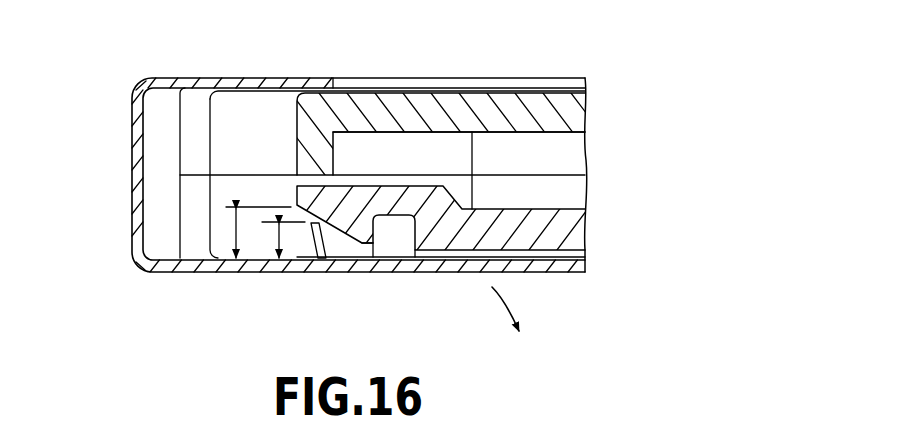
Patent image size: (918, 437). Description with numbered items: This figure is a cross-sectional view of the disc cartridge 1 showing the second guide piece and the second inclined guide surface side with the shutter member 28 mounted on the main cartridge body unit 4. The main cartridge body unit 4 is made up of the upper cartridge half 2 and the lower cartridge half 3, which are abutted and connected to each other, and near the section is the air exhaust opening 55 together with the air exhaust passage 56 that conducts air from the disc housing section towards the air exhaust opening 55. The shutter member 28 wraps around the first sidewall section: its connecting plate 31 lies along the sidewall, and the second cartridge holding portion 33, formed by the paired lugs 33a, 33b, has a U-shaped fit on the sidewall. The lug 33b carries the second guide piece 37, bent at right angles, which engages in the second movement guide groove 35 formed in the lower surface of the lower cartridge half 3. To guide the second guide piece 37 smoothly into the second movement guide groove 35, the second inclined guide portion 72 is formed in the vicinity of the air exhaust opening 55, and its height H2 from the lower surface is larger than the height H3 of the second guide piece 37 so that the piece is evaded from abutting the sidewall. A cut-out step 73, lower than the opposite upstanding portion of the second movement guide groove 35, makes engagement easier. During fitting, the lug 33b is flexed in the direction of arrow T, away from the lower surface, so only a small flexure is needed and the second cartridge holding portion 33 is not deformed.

The disc cartridge 1 is at (538, 63).
The upper cartridge half 2 is at (587, 133).
The lower cartridge half 3 is at (563, 225).
The main cartridge body unit 4 is at (648, 138).
The shutter member 28 is at (112, 104).
The connecting plate 31 is at (132, 144).
The second cartridge holding portion 33 is at (132, 222).
The lug 33a is at (282, 77).
The lug 33b is at (177, 265).
The second movement guide groove 35 is at (408, 235).
The second guide piece 37 is at (313, 240).
The air exhaust opening 55 is at (297, 186).
The air exhaust passage 56 is at (390, 143).
The second inclined guide portion 72 is at (372, 240).
The cut-out step 73 is at (373, 262).
The height of second inclined guide portion H2 is at (236, 263).
The height of second guide piece H3 is at (279, 263).
The flexing direction arrow T is at (515, 316).